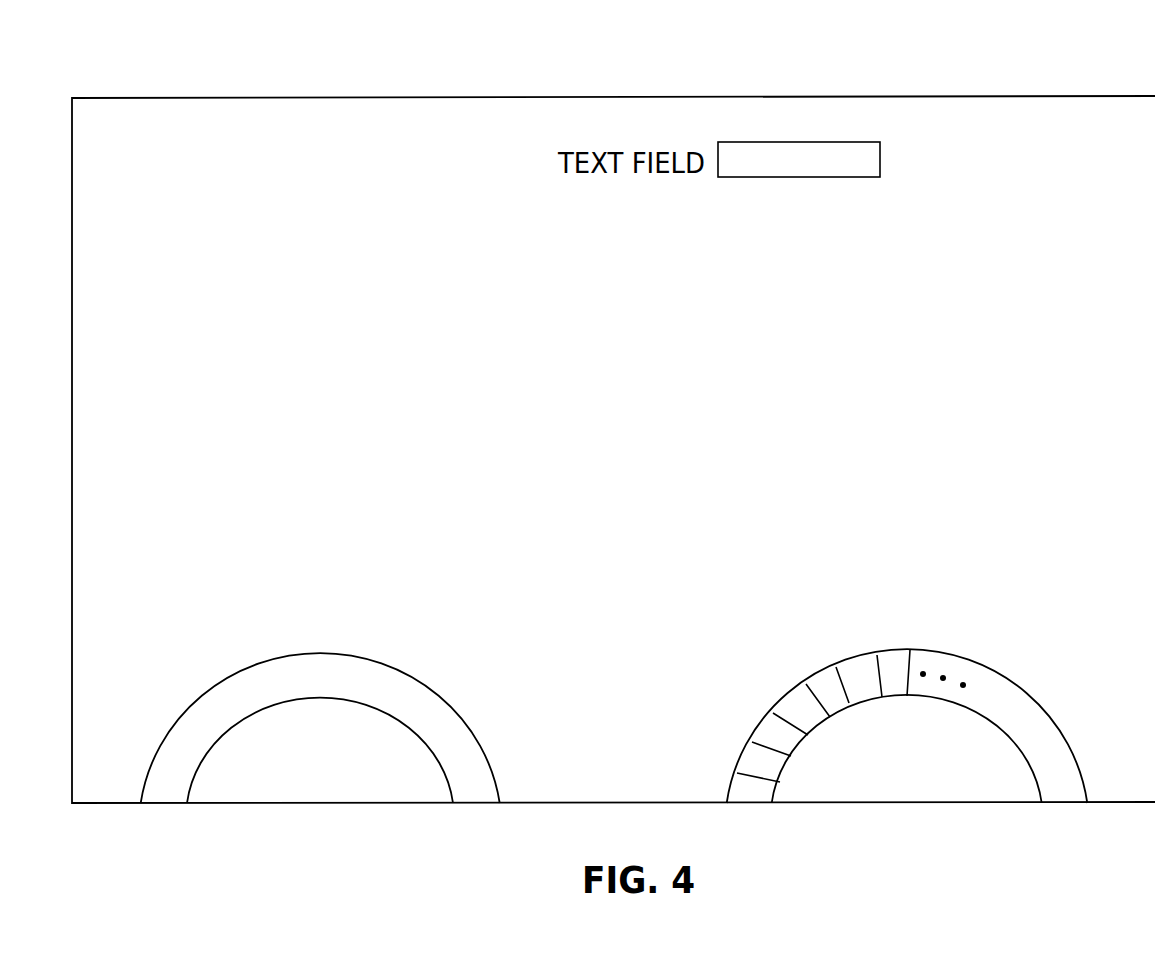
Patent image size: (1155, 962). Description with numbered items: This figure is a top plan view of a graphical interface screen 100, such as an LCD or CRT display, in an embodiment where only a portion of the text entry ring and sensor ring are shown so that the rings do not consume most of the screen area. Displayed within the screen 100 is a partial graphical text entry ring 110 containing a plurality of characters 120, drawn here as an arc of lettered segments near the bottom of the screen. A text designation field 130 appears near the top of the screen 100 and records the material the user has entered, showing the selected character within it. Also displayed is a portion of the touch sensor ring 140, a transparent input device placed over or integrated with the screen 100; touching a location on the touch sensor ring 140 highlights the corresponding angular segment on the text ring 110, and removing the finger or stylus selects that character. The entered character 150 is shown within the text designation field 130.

The graphical interface screen 100 is at (638, 96).
The graphical text entry ring 110 is at (930, 650).
The characters 120 is at (825, 682).
The text designation field 130 is at (880, 158).
The touch sensor ring 140 is at (318, 652).
The entered character 150 is at (740, 162).